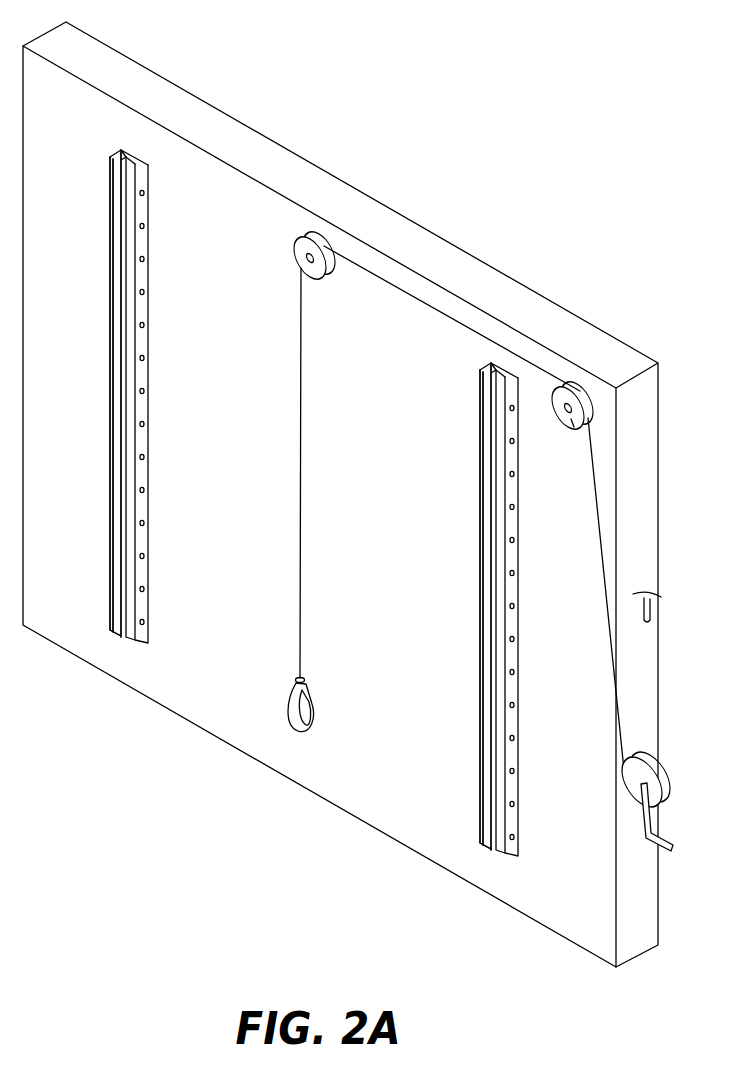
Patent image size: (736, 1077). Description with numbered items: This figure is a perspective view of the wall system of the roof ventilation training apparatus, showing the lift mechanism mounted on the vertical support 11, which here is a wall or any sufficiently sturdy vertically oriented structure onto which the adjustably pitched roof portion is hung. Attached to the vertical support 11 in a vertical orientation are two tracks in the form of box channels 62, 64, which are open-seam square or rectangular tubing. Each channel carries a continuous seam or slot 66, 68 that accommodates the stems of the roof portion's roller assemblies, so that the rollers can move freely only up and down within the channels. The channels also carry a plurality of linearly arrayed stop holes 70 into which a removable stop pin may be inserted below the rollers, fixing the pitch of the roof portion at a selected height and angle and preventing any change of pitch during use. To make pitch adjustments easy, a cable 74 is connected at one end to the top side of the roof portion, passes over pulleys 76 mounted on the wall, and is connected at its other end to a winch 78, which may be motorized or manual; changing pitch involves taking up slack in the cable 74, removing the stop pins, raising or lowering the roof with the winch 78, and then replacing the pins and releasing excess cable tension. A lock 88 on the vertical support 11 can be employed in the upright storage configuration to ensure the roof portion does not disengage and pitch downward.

The vertical support 11 is at (438, 172).
The box channel 62 is at (483, 593).
The box channel 64 is at (112, 374).
The slot 66 is at (492, 521).
The slot 68 is at (124, 318).
The stop holes 70 is at (144, 360).
The cable 74 is at (298, 397).
The pulleys 76 is at (298, 256).
The winch 78 is at (645, 758).
The lock 88 is at (648, 582).